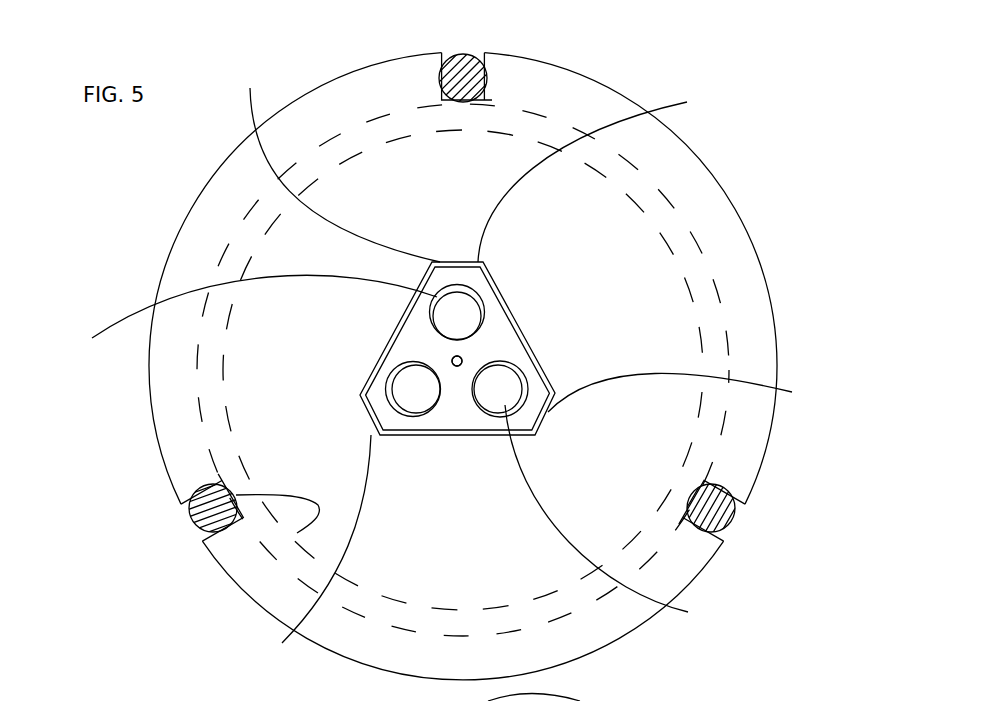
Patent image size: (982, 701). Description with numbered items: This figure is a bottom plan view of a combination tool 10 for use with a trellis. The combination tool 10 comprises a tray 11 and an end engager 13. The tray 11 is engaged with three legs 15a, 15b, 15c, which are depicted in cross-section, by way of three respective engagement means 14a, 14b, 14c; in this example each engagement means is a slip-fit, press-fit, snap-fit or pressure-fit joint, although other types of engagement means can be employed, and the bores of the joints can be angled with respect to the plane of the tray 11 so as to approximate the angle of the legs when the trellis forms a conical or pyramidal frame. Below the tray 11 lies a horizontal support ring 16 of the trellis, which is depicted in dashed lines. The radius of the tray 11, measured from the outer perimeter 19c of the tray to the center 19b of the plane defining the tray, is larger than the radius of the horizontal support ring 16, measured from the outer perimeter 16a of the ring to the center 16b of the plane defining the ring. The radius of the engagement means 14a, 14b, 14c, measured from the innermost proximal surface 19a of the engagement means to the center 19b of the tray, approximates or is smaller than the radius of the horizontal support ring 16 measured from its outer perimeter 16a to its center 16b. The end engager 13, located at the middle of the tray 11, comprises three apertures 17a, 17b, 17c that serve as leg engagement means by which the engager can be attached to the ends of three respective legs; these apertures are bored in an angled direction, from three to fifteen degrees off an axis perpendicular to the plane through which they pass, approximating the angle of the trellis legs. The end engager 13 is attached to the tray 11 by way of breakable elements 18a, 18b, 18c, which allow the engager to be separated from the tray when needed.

The combination tool 10 is at (145, 195).
The tray 11 is at (485, 336).
The end engager 13 is at (503, 325).
The engagement means 14a is at (445, 62).
The engagement means 14b is at (727, 483).
The engagement means 14c is at (198, 486).
The leg 15a is at (487, 80).
The leg 15b is at (730, 517).
The leg 15c is at (190, 505).
The horizontal support ring 16 is at (650, 190).
The outer perimeter of the ring 16a is at (690, 229).
The center of the plane defining the ring 16b is at (246, 373).
The aperture 17a is at (610, 174).
The aperture 17b is at (616, 520).
The aperture 17c is at (242, 312).
The breakable element 18a is at (328, 164).
The breakable element 18b is at (696, 392).
The breakable element 18c is at (299, 547).
The innermost proximal surface of the engagement means 19a is at (297, 533).
The center of the plane defining the tray 19b is at (452, 358).
The outer perimeter of the tray 19c is at (170, 247).